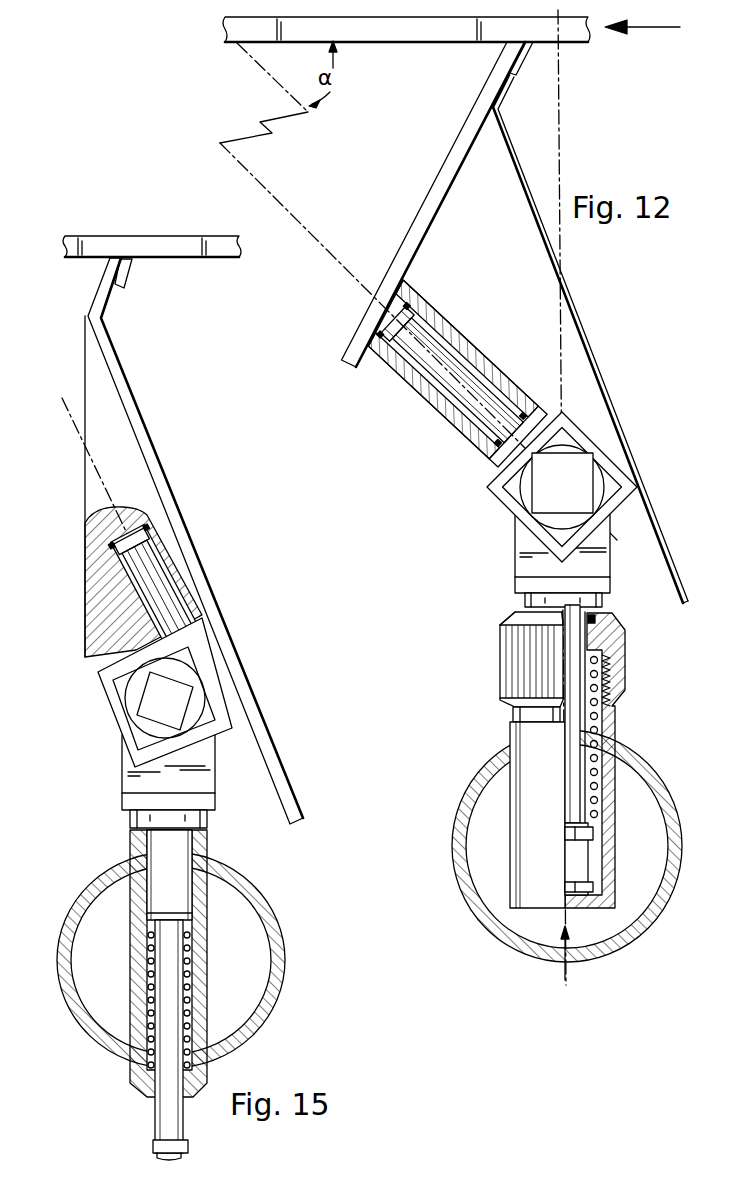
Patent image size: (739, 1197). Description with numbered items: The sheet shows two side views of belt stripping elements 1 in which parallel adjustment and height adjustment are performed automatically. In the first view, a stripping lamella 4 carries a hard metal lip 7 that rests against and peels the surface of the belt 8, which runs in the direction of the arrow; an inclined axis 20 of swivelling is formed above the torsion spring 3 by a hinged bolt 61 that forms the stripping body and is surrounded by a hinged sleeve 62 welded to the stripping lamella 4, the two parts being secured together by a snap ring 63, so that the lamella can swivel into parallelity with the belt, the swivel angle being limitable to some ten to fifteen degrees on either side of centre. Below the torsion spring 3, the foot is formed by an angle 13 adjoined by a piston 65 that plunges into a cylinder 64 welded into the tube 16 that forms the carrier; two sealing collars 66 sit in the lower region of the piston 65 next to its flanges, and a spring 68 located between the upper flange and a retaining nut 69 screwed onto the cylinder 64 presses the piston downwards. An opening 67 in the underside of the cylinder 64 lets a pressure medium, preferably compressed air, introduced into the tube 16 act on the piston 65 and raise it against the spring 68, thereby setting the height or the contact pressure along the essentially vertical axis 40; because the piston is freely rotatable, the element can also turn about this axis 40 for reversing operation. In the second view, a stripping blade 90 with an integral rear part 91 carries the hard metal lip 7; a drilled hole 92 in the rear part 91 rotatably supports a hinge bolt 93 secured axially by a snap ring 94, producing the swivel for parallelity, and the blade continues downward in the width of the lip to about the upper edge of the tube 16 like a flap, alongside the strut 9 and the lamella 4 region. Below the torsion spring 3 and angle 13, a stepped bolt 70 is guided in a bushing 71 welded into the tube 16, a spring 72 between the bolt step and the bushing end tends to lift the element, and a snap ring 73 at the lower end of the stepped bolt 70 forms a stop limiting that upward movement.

In FIG. 12, the stripping element 1 is at (450, 387).
In FIG. 12, the torsion spring 3 is at (620, 383).
In FIG. 15, the torsion spring 3 is at (93, 708).
In FIG. 12, the stripping lamella 4 is at (445, 176).
In FIG. 12, the hard metal lip 7 is at (523, 57).
In FIG. 15, the hard metal lip 7 is at (127, 270).
In FIG. 12, the belt 8 is at (437, 33).
In FIG. 12, the tension rod 9 is at (582, 325).
In FIG. 12, the angle 13 is at (520, 538).
In FIG. 15, the angle 13 is at (127, 782).
In FIG. 12, the tube 16 is at (658, 800).
In FIG. 15, the tube 16 is at (258, 892).
In FIG. 12, the inclined axis 20 is at (282, 200).
In FIG. 15, the inclined axis 20 is at (80, 440).
In FIG. 12, the second axis 40 is at (560, 110).
In FIG. 12, the hinged bolt 61 is at (457, 380).
In FIG. 12, the hinged sleeve 62 is at (450, 373).
In FIG. 12, the snap ring 63 is at (413, 315).
In FIG. 12, the cylinder 64 is at (523, 737).
In FIG. 12, the piston 65 is at (580, 725).
In FIG. 12, the sealing collars 66 is at (590, 843).
In FIG. 12, the opening 67 is at (577, 900).
In FIG. 12, the spring 68 is at (602, 772).
In FIG. 12, the retaining nut 69 is at (622, 647).
In FIG. 15, the stepped bolt 70 is at (157, 880).
In FIG. 15, the bushing 71 is at (203, 977).
In FIG. 15, the spring 72 is at (190, 938).
In FIG. 15, the snap ring 73 is at (153, 1143).
In FIG. 15, the stripping blade 90 is at (185, 535).
In FIG. 15, the rear part 91 is at (100, 398).
In FIG. 15, the drilled hole 92 is at (114, 583).
In FIG. 15, the hinge bolt 93 is at (156, 588).
In FIG. 15, the snap ring 94 is at (102, 565).